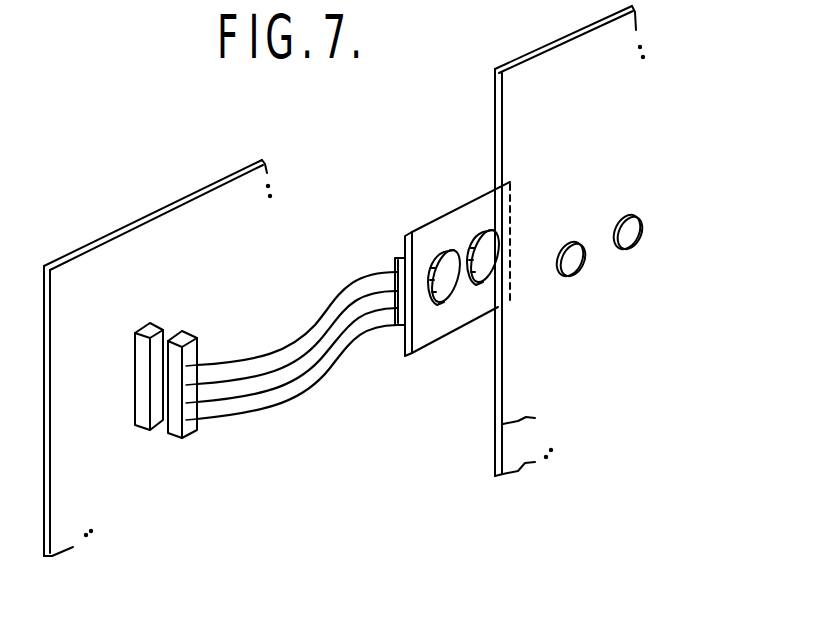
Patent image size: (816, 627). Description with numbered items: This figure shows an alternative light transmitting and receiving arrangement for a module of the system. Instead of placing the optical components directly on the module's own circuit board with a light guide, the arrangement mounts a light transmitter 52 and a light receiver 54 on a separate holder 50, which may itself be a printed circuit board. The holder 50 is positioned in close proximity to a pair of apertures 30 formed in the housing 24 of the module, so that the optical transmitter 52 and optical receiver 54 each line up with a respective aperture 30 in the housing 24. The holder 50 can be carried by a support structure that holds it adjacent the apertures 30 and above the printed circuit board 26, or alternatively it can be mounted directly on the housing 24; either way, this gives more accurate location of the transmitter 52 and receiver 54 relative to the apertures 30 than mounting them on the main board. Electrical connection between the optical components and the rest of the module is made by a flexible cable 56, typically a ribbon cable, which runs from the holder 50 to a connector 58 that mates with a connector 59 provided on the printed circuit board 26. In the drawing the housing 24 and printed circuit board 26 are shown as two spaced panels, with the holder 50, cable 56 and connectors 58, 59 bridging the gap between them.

The housing 24 is at (503, 424).
The printed circuit board 26 is at (142, 256).
The apertures 30 is at (580, 293).
The holder 50 is at (423, 327).
The optical transmitter 52 is at (433, 252).
The optical receiver 54 is at (471, 240).
The flexible cable 56 is at (297, 400).
The connector 58 is at (190, 432).
The connector 59 is at (140, 432).